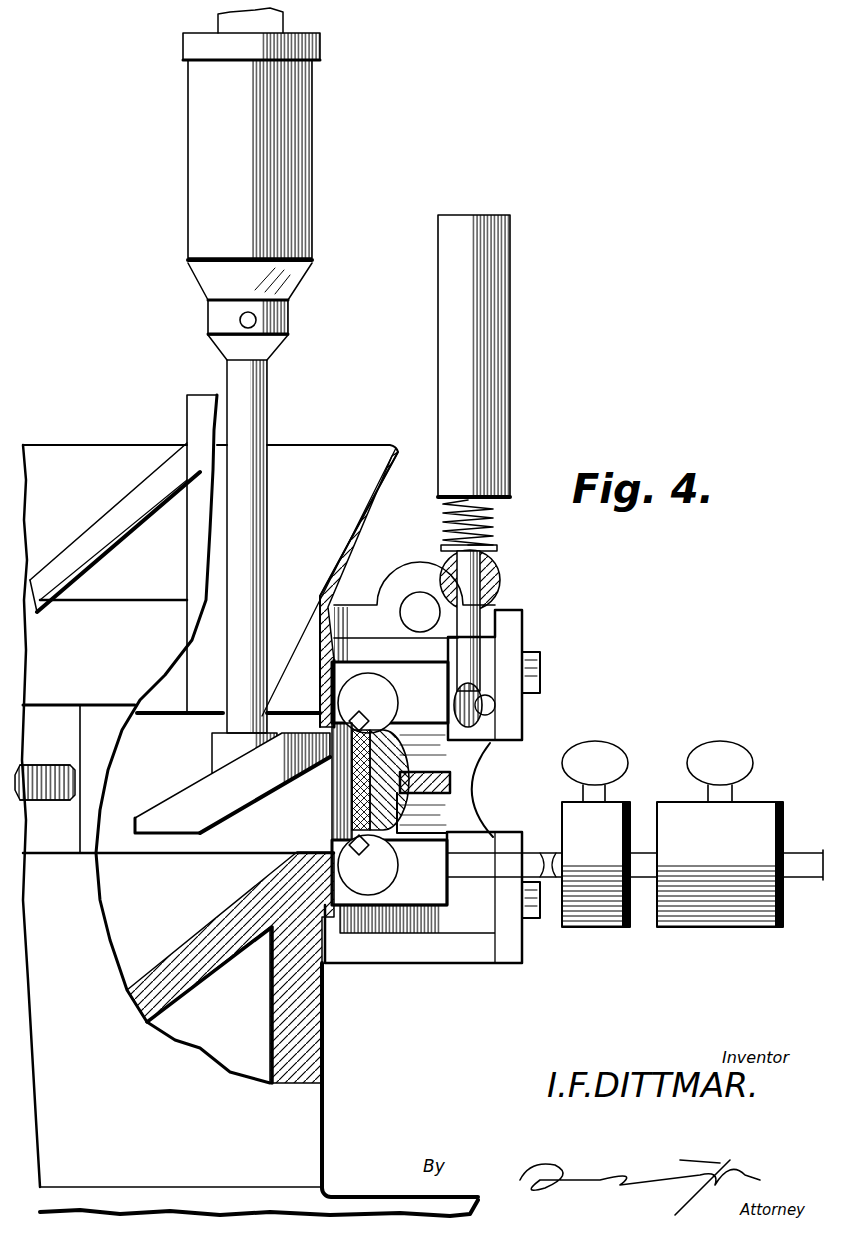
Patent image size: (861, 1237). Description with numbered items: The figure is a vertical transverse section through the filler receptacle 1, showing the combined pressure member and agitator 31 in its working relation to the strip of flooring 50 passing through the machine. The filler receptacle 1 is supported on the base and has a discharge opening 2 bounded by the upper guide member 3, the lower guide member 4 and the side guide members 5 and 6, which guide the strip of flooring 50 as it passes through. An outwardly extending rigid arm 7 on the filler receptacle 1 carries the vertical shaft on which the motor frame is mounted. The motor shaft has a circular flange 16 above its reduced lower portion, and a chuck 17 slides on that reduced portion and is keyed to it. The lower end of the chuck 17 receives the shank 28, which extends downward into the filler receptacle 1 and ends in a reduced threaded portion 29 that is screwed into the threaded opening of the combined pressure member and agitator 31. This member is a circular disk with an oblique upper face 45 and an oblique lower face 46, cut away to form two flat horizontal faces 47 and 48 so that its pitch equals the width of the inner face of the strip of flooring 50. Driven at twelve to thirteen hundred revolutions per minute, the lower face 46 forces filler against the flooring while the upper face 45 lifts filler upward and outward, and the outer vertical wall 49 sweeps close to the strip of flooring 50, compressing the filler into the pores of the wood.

The filler receptacle 1 is at (250, 805).
The discharge opening 2 is at (324, 800).
The upper guide member 3 is at (368, 703).
The lower guide member 4 is at (389, 870).
The side guide member 5 is at (335, 820).
The side guide member 6 is at (75, 946).
The rigid arm 7 is at (195, 560).
The circular flange 16 is at (300, 42).
The chuck 17 is at (290, 128).
The shank 28 is at (275, 320).
The reduced threaded portion 29 is at (258, 530).
The combined pressure member and agitator 31 is at (244, 767).
The oblique upper face 45 is at (184, 790).
The oblique lower face 46 is at (268, 800).
The flat horizontal face 47 is at (309, 721).
The flat horizontal face 48 is at (170, 833).
The outer vertical wall 49 is at (390, 692).
The strip of flooring 50 is at (470, 765).